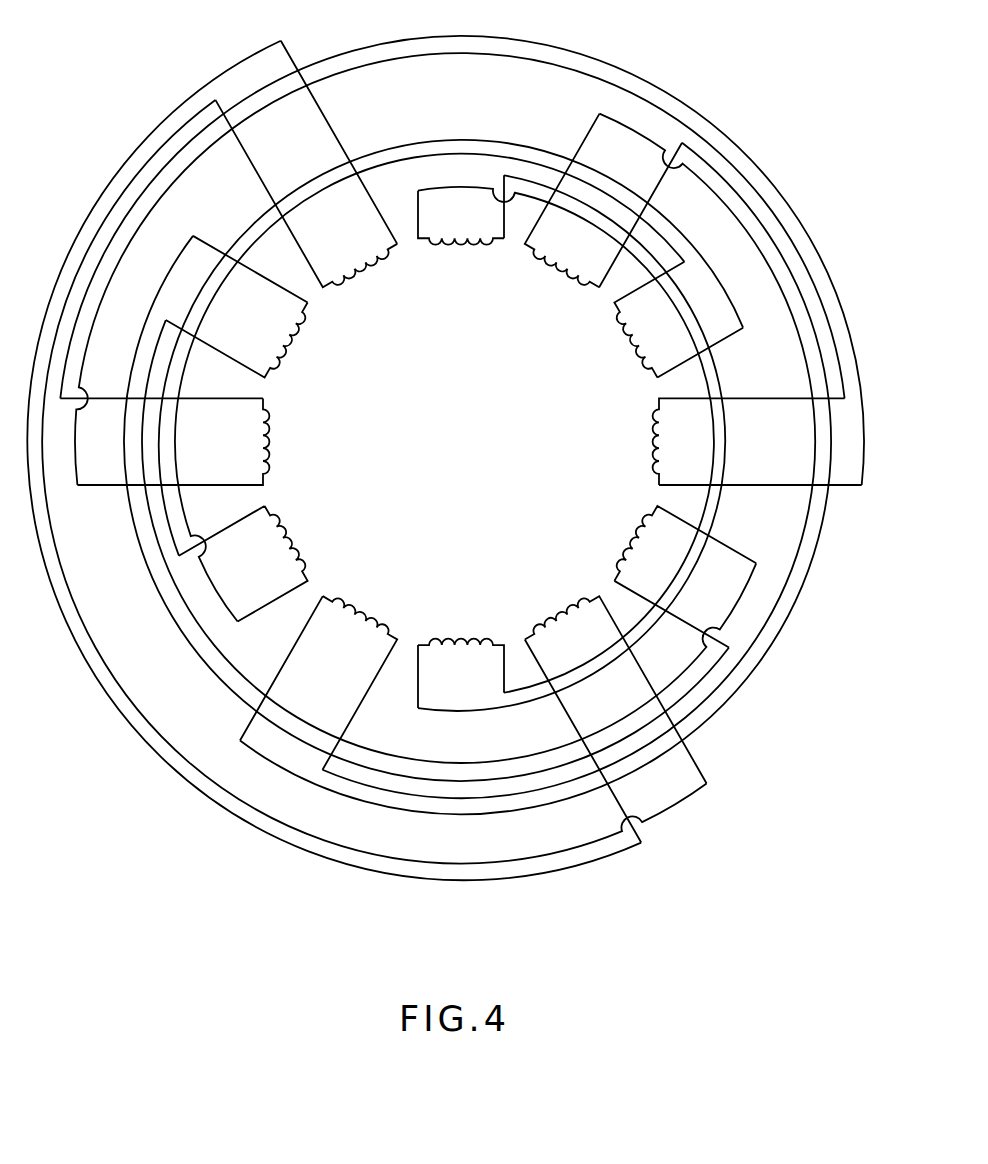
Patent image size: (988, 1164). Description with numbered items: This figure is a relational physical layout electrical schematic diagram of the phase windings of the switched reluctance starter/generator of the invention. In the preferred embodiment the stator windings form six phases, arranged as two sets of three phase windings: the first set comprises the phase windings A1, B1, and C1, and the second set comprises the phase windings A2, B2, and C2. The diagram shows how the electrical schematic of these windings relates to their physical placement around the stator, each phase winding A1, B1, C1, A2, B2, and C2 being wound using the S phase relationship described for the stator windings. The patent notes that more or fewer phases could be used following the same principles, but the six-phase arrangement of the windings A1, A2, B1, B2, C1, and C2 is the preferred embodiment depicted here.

The phase winding A1 is at (462, 247).
The phase winding A2 is at (598, 443).
The phase winding B1 is at (366, 460).
The phase winding B2 is at (451, 381).
The phase winding C1 is at (540, 464).
The phase winding C2 is at (440, 508).